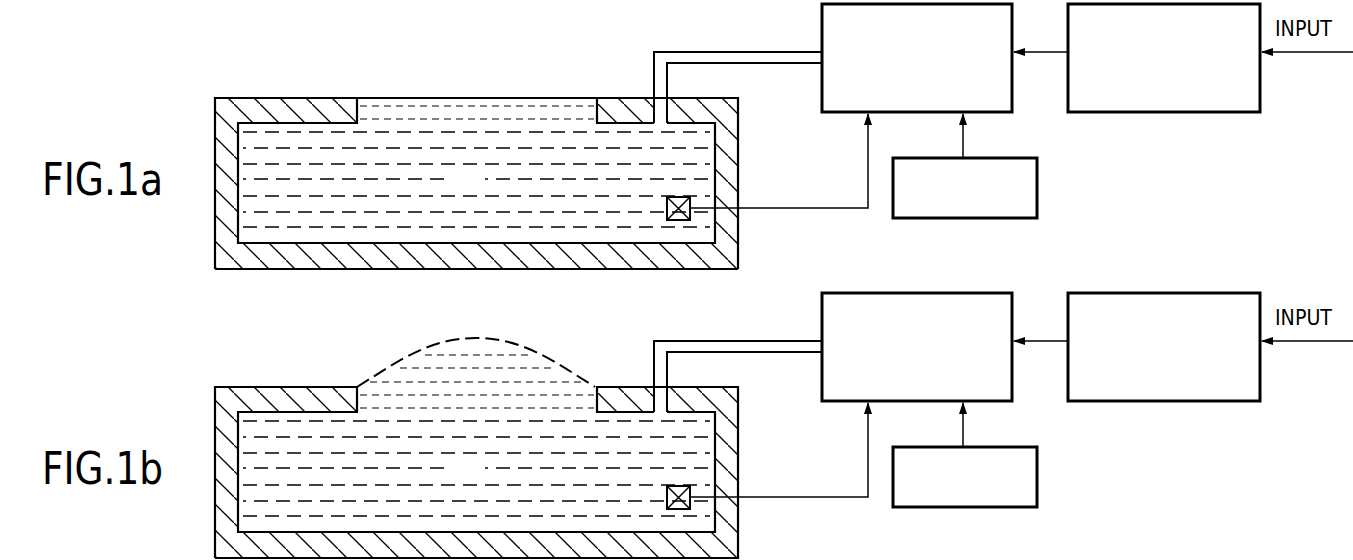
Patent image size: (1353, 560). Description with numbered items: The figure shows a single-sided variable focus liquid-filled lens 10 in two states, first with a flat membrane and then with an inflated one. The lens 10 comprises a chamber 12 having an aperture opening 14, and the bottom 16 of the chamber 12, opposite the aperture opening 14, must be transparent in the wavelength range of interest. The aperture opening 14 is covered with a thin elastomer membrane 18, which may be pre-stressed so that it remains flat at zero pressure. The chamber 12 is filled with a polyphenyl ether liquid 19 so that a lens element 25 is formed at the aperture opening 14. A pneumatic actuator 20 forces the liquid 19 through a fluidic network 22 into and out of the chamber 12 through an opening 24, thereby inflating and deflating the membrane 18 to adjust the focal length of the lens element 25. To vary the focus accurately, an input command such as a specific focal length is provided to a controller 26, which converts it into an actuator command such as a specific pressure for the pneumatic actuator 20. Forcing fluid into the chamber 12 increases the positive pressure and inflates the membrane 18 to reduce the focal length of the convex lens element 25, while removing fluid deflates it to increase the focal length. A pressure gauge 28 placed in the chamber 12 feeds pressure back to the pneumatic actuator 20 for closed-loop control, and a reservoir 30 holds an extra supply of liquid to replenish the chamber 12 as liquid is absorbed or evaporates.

In FIG. 1A, the variable focus liquid-filled lens 10 is at (158, 65).
In FIG. 1A, the chamber 12 is at (215, 168).
In FIG. 1B, the chamber 12 is at (454, 472).
In FIG. 1A, the aperture opening 14 is at (464, 121).
In FIG. 1B, the aperture opening 14 is at (471, 365).
In FIG. 1A, the bottom 16 is at (460, 271).
In FIG. 1A, the elastomer membrane 18 is at (527, 98).
In FIG. 1A, the polyphenyl ether liquid 19 is at (477, 190).
In FIG. 1B, the polyphenyl ether liquid 19 is at (476, 468).
In FIG. 1A, the pneumatic actuator 20 is at (822, 42).
In FIG. 1B, the pneumatic actuator 20 is at (888, 346).
In FIG. 1A, the fluidic network 22 is at (735, 52).
In FIG. 1B, the fluidic network 22 is at (738, 352).
In FIG. 1A, the opening 24 is at (658, 128).
In FIG. 1B, the lens element 25 is at (478, 341).
In FIG. 1A, the controller 26 is at (1157, 112).
In FIG. 1B, the controller 26 is at (1137, 413).
In FIG. 1A, the pressure gauge 28 is at (690, 197).
In FIG. 1B, the pressure gauge 28 is at (767, 456).
In FIG. 1A, the reservoir 30 is at (1037, 195).
In FIG. 1B, the reservoir 30 is at (997, 455).